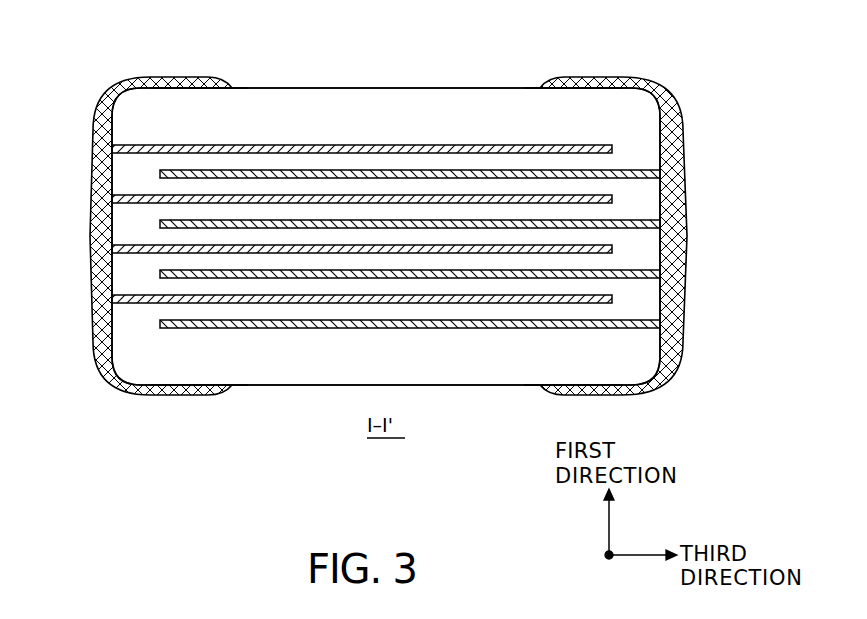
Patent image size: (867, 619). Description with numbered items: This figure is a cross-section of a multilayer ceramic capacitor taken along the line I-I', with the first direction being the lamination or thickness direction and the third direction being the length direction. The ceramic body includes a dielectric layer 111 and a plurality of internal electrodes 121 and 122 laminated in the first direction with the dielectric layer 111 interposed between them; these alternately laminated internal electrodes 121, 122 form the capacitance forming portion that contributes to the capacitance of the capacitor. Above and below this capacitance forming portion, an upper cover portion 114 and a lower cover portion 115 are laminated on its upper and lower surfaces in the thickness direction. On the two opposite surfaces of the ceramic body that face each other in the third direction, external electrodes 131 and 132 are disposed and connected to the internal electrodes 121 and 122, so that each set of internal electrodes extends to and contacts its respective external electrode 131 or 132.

The dielectric layer 111 is at (353, 165).
The upper cover portion 114 is at (487, 112).
The lower cover portion 115 is at (480, 373).
The first internal electrode 121 is at (290, 148).
The second internal electrode 122 is at (425, 175).
The first external electrode 131 is at (92, 203).
The second external electrode 132 is at (685, 198).